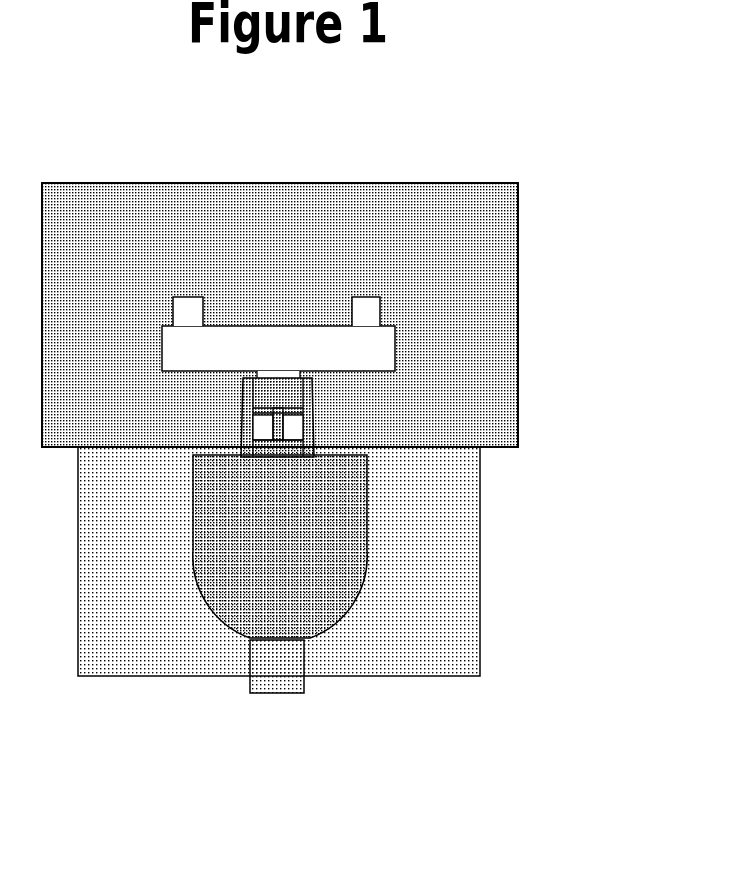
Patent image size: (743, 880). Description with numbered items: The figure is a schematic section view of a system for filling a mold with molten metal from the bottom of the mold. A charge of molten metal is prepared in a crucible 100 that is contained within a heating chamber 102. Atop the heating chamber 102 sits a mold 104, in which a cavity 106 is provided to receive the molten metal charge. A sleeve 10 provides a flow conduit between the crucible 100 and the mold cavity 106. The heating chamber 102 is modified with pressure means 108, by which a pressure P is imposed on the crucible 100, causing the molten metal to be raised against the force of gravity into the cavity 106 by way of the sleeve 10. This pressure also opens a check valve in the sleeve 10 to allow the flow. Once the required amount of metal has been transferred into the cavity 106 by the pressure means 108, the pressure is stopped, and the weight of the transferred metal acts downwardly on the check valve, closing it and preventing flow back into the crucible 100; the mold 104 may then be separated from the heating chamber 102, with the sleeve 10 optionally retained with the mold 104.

The sleeve 10 is at (313, 427).
The crucible 100 is at (228, 575).
The heating chamber 102 is at (440, 588).
The mold 104 is at (475, 317).
The cavity 106 is at (276, 343).
The pressure means 108 is at (287, 672).
The pressure P is at (284, 708).